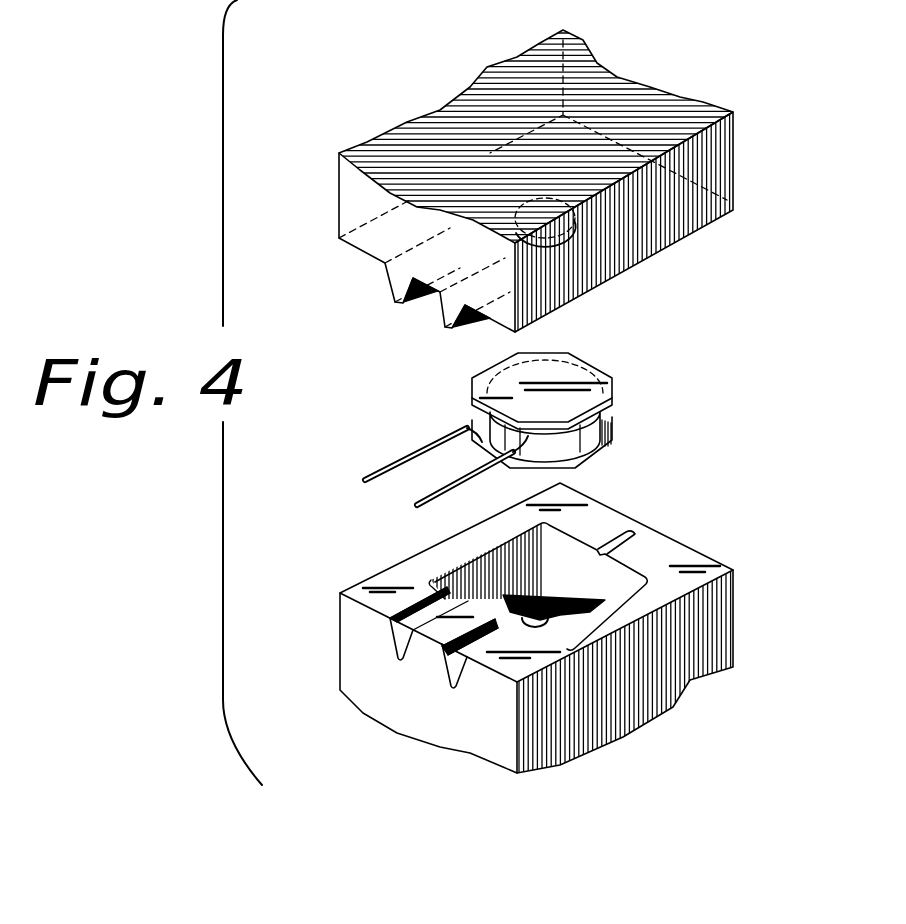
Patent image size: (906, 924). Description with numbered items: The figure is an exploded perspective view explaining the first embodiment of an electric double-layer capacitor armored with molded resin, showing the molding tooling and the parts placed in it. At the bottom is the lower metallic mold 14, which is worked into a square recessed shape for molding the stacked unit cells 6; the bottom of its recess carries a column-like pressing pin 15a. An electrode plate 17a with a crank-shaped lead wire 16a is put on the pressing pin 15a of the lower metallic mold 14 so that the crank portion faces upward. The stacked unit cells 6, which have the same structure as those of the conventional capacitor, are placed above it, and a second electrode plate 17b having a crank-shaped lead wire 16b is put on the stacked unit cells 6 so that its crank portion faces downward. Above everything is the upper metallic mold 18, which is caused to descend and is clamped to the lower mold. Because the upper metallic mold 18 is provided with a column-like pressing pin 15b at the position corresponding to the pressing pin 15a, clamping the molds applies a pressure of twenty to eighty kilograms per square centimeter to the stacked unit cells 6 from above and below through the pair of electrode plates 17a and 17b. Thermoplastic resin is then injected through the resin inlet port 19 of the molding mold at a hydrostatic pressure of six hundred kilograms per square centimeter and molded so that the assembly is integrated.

The upper metallic mold 18 is at (607, 78).
The pressing pin 15b is at (570, 230).
The electrode plate 17b is at (610, 380).
The electrode plate 17a is at (613, 428).
The stacked unit cells 6 is at (597, 452).
The lead wire 16a is at (390, 460).
The lead wire 16b is at (417, 503).
The resin inlet port 19 is at (637, 523).
The lower metallic mold 14 is at (717, 615).
The pressing pin 15a is at (543, 620).